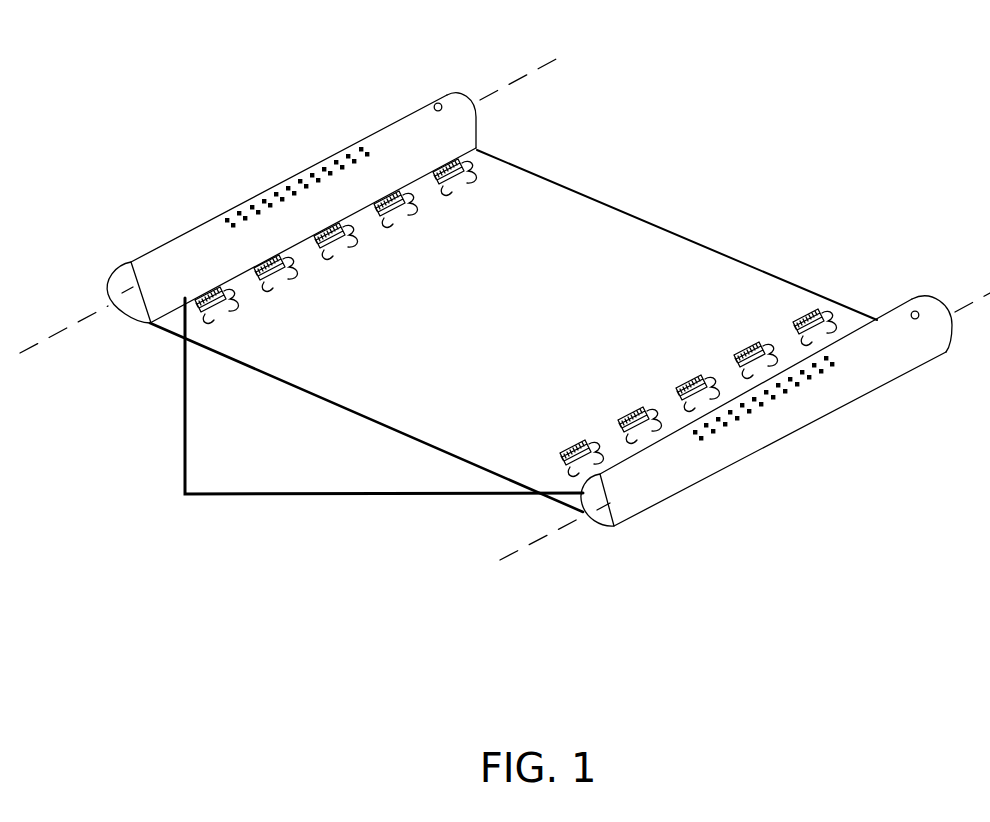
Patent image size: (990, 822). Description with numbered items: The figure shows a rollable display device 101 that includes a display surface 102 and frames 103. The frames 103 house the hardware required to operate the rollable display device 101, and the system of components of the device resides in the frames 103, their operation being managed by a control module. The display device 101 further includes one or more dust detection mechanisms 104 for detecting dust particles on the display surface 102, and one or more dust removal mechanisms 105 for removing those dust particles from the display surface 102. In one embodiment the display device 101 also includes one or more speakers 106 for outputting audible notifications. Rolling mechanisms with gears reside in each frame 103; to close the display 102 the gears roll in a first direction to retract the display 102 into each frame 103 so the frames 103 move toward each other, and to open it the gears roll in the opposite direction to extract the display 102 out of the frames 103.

The rollable display device 101 is at (290, 197).
The display surface 102 is at (513, 327).
The frames 103 is at (363, 419).
The dust detection mechanisms 104 is at (475, 293).
The dust removal mechanisms 105 is at (526, 253).
The speakers 106 is at (702, 175).